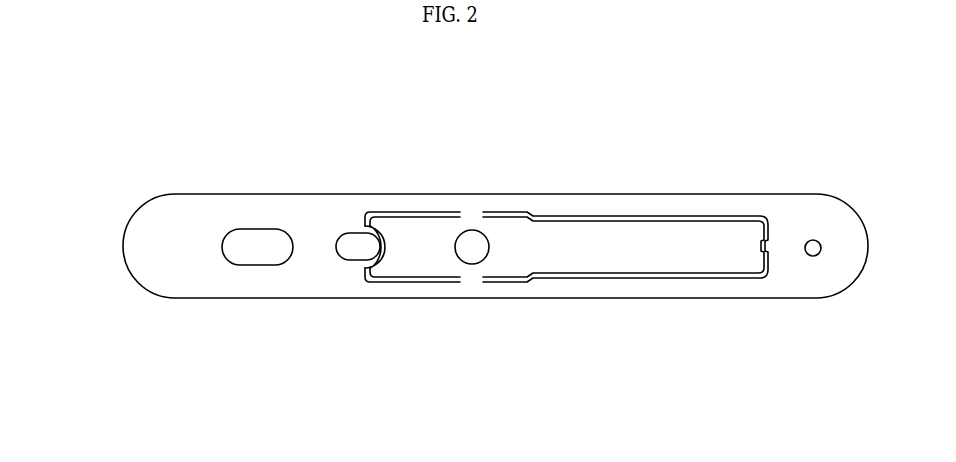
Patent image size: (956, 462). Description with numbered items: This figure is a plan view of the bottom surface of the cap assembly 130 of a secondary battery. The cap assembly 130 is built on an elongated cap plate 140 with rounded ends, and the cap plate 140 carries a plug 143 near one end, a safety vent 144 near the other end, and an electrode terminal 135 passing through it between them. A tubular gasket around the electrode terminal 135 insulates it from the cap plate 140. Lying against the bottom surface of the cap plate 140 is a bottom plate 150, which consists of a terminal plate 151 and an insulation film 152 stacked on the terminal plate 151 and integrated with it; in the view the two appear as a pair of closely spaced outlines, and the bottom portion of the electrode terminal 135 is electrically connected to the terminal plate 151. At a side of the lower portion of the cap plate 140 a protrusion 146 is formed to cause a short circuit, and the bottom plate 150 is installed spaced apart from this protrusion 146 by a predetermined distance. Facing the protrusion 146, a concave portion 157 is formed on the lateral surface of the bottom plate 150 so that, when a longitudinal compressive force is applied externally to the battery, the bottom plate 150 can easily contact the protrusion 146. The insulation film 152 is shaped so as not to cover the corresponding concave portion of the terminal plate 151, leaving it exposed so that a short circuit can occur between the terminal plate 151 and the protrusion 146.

The cap assembly 130 is at (94, 171).
The cap plate 140 is at (182, 204).
The safety vent 144 is at (264, 232).
The protrusion 146 is at (356, 245).
The concave portion 157 is at (387, 250).
The electrode terminal 135 is at (472, 230).
The plug 143 is at (813, 240).
The bottom plate 150 is at (567, 362).
The terminal plate 151 is at (578, 258).
The insulation film 152 is at (652, 272).